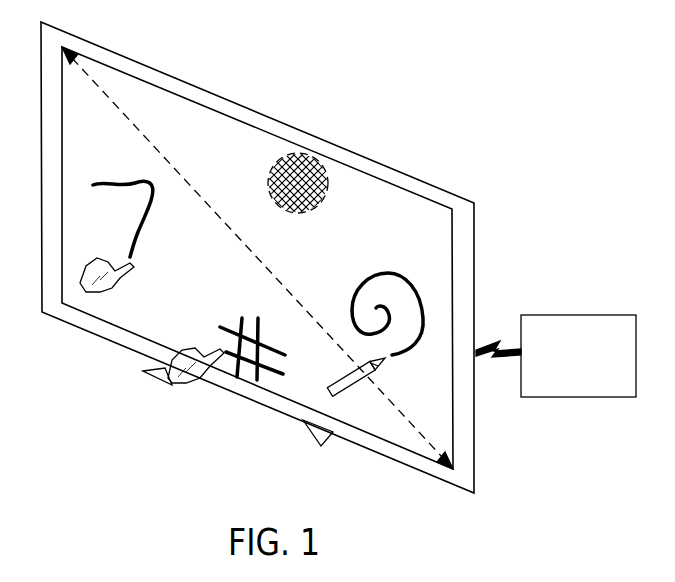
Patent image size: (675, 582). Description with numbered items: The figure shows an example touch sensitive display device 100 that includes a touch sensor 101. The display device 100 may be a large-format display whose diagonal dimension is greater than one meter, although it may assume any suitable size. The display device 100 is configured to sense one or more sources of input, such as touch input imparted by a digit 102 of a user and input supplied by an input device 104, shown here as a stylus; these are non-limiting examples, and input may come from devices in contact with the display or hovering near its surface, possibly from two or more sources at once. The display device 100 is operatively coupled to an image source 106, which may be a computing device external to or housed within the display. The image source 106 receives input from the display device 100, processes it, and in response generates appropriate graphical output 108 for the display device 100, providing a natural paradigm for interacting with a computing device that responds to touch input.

The touch sensitive display device 100 is at (308, 62).
The touch sensor 101 is at (321, 163).
The digit 102 is at (136, 270).
The input device 104 is at (333, 394).
The image source 106 is at (556, 356).
The graphical output 108 is at (128, 183).